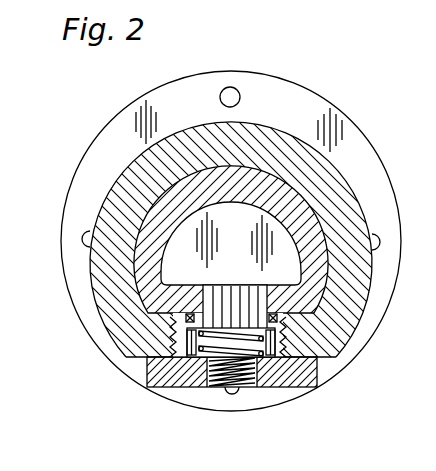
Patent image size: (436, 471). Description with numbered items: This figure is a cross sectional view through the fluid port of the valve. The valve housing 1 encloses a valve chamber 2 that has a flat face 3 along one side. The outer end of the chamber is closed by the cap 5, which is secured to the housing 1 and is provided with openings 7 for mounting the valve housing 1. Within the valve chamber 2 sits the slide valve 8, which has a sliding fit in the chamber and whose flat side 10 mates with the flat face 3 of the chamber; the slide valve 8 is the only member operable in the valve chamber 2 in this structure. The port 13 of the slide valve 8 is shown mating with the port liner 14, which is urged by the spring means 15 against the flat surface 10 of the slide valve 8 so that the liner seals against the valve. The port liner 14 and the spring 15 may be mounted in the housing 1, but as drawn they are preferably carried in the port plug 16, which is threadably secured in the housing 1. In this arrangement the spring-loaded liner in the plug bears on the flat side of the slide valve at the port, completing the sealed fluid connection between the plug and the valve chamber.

The valve housing 1 is at (370, 285).
The valve chamber 2 is at (243, 217).
The flat face 3 is at (311, 313).
The cap 5 is at (110, 120).
The openings 7 is at (228, 91).
The slide valve 8 is at (147, 268).
The flat side 10 is at (143, 334).
The port 13 is at (231, 293).
The port liner 14 is at (206, 295).
The spring means 15 is at (201, 335).
The port plug 16 is at (152, 372).